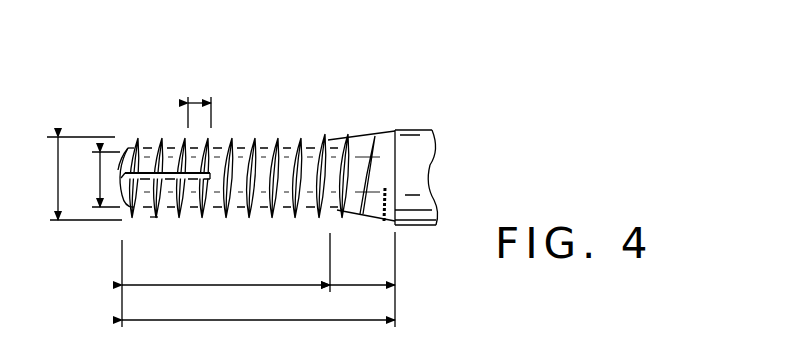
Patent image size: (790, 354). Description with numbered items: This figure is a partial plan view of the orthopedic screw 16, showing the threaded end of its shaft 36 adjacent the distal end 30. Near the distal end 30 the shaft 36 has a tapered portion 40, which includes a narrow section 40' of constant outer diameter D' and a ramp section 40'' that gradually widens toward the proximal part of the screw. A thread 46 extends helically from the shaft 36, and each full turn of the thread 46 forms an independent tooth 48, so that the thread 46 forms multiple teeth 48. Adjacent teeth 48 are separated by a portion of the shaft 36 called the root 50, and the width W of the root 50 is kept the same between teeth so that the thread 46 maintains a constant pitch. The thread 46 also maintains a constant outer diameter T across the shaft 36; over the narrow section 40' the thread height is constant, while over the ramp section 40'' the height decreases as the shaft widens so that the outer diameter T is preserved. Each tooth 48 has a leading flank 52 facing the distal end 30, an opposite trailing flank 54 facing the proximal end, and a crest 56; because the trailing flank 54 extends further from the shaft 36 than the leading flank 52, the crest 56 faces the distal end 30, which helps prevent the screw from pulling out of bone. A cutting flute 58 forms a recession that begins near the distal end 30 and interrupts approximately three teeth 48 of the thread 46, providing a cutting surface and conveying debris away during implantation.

The orthopedic screw 16 is at (406, 112).
The distal end 30 is at (111, 150).
The shaft 36 is at (416, 211).
The tapered portion 40 is at (258, 307).
The narrow section 40' is at (226, 280).
The ramp section 40'' is at (362, 279).
The thread 46 is at (228, 232).
The teeth 48 is at (259, 138).
The root 50 is at (291, 140).
The leading flank 52 is at (150, 217).
The trailing flank 54 is at (157, 219).
The crest 56 is at (288, 222).
The cutting flute 58 is at (131, 173).
The outer diameter of thread T is at (58, 178).
The outer diameter of narrow section D' is at (93, 179).
The width of root W is at (198, 100).